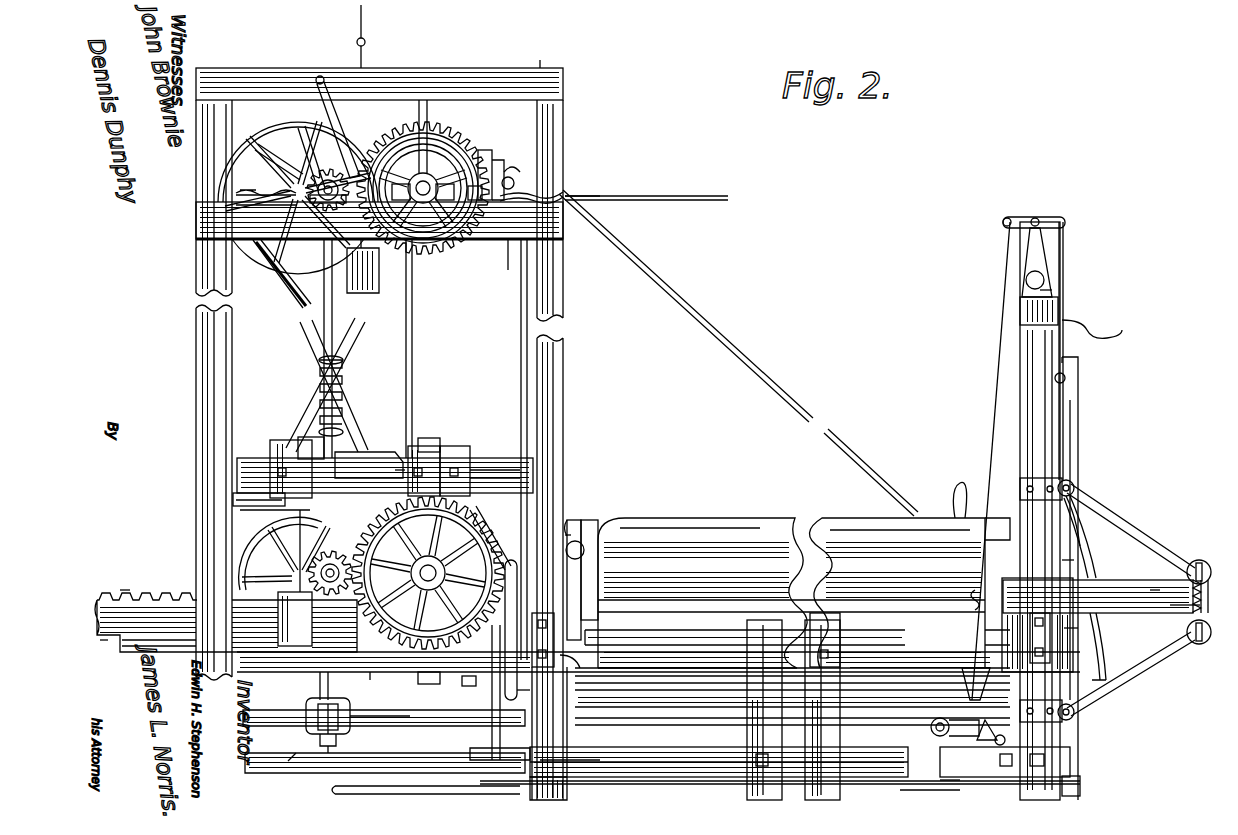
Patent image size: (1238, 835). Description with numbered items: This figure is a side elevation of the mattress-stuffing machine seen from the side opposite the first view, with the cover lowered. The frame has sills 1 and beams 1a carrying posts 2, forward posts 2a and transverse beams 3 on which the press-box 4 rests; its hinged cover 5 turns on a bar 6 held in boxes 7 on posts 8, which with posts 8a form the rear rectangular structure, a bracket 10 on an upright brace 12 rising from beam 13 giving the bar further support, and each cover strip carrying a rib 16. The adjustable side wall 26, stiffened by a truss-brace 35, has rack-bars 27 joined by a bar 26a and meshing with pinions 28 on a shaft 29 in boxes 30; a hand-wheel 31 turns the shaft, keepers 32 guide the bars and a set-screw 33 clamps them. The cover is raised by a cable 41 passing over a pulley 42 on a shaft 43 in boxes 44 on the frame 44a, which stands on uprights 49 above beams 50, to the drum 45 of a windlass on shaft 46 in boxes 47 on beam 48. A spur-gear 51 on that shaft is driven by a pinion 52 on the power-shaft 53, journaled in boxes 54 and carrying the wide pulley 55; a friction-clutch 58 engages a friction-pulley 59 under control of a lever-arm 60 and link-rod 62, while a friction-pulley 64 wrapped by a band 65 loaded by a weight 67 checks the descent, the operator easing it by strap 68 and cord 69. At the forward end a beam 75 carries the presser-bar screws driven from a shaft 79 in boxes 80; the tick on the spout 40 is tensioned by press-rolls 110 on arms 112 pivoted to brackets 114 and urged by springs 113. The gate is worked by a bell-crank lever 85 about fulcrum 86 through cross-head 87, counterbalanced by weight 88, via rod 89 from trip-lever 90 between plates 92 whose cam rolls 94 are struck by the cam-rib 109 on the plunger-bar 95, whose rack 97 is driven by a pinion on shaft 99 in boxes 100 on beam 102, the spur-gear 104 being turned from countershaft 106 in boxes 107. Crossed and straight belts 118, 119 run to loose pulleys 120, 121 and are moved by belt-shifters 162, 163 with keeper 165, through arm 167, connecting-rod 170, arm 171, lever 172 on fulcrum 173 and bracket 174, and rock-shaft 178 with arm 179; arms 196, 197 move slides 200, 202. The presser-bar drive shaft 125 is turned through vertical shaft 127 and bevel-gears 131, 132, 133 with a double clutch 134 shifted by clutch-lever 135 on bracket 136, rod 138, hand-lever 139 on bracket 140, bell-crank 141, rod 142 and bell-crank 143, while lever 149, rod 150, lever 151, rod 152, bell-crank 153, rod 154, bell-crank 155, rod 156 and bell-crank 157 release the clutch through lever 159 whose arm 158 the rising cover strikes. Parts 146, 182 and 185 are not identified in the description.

The sills 1 is at (658, 700).
The horizontal beams 1a is at (792, 670).
The uprights 2 is at (747, 666).
The posts 2a is at (1062, 408).
The transverse horizontal beams 3 is at (842, 700).
The press-box 4 is at (804, 581).
The top or cover 5 is at (592, 530).
The transverse bar 6 is at (580, 528).
The boxes 7 is at (570, 520).
The posts 8 is at (561, 450).
The posts 8a is at (196, 380).
The bracket 10 is at (490, 540).
The upright brace 12 is at (490, 470).
The longitudinal beam 13 is at (505, 640).
The central longitudinal rib 16 is at (600, 518).
The side wall 26 is at (675, 528).
The bar 26a is at (1037, 625).
The rack-bar 27 is at (585, 580).
The pinion 28 is at (1106, 664).
The shaft 29 is at (670, 640).
The boxes 30 is at (540, 614).
The hand-wheel 31 is at (530, 675).
The keepers 32 is at (1112, 574).
The set-screw 33 is at (964, 603).
The truss-brace 35 is at (900, 550).
The spout 40 is at (1160, 585).
The cable 41 is at (738, 353).
The roll or pulley 42 is at (500, 160).
The shaft 43 is at (515, 172).
The boxes 44 is at (512, 180).
The frame 44a is at (545, 55).
The drum 45 is at (438, 140).
The shaft 46 is at (418, 196).
The boxes 47 is at (506, 200).
The horizontal beam 48 is at (423, 205).
The short uprights 49 is at (230, 165).
The horizontal beams 50 is at (578, 242).
The large spur-gear 51 is at (486, 152).
The small pinion 52 is at (322, 168).
The power-shaft 53 is at (334, 333).
The boxes 54 is at (318, 203).
The wide pulley 55 is at (288, 128).
The friction-clutch 58 is at (424, 135).
The friction-pulley 59 is at (445, 150).
The lever-arm 60 is at (295, 175).
The link-rod 62 is at (266, 185).
The friction-pulley 64 is at (445, 255).
The friction band 65 is at (330, 92).
The weight 67 is at (370, 292).
The strap 68 is at (362, 48).
The cord 69 is at (362, 10).
The horizontal transverse beam 75 is at (1020, 310).
The shaft 79 is at (1042, 277).
The boxes 80 is at (1050, 290).
The bell-crank lever 85 is at (945, 790).
The fulcrum 86 is at (940, 718).
The cross-head 87 is at (996, 732).
The weight 88 is at (428, 572).
The rod 89 is at (924, 802).
The trip-lever 90 is at (496, 756).
The vertical plates 92 is at (492, 730).
The antifriction-rolls 94 is at (470, 615).
The plunger-bar 95 is at (226, 611).
The rack-bar 97 is at (119, 580).
The shaft 99 is at (411, 573).
The boxes 100 is at (400, 619).
The horizontal beam 102 is at (378, 684).
The large spur-gear 104 is at (425, 688).
The countershaft 106 is at (330, 584).
The boxes 107 is at (297, 619).
The cam-rib 109 is at (93, 642).
The press-rolls 110 is at (1211, 594).
The pivoted arms 112 is at (1131, 600).
The springs 113 is at (1180, 602).
The brackets 114 is at (1050, 486).
The crossed belt 118 is at (344, 400).
The straight belt 119 is at (412, 400).
The pulley 120 is at (240, 512).
The pulley 121 is at (327, 385).
The long horizontal shaft 125 is at (792, 731).
The vertical shaft 127 is at (318, 300).
The bevel-gear 131 is at (308, 710).
The bevel-gear 132 is at (389, 731).
The bevel-gear 133 is at (325, 740).
The double clutch 134 is at (342, 728).
The clutch-lever 135 is at (328, 753).
The bracket 136 is at (385, 763).
The connecting-rod 138 is at (426, 800).
The hand-lever 139 is at (955, 488).
The depending bracket 140 is at (968, 672).
The bell-crank 141 is at (1080, 784).
The rod 142 is at (1078, 428).
The bell-crank 143 is at (1078, 358).
The arm 146 is at (1078, 564).
The straight lever 149 is at (1066, 378).
The rod 150 is at (1064, 248).
The straight lever 151 is at (1020, 217).
The vertical rod 152 is at (996, 416).
The bell-crank 153 is at (1030, 757).
The rod 154 is at (780, 764).
The bell-crank 155 is at (570, 757).
The vertical rod 156 is at (521, 270).
The bell-crank 157 is at (520, 239).
The angular arm 158 is at (722, 196).
The lever 159 is at (585, 197).
The belt-shifter 162 is at (385, 475).
The belt-shifter 163 is at (272, 445).
The loop or keeper 165 is at (320, 551).
The arm 167 is at (462, 462).
The connecting-rod 170 is at (792, 697).
The arm 171 is at (473, 684).
The lever 172 is at (1078, 640).
The fulcrum 173 is at (1078, 540).
The bracket 174 is at (1082, 510).
The rock-shaft 178 is at (296, 560).
The arm 179 is at (233, 498).
The rail 182 is at (300, 688).
The bracket 185 is at (300, 753).
The arm 196 is at (435, 440).
The arm 197 is at (300, 437).
The slide 200 is at (385, 455).
The longer slide 202 is at (404, 460).